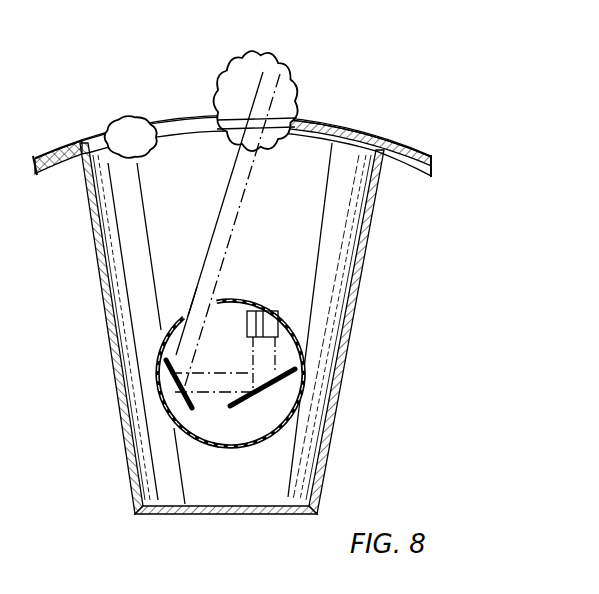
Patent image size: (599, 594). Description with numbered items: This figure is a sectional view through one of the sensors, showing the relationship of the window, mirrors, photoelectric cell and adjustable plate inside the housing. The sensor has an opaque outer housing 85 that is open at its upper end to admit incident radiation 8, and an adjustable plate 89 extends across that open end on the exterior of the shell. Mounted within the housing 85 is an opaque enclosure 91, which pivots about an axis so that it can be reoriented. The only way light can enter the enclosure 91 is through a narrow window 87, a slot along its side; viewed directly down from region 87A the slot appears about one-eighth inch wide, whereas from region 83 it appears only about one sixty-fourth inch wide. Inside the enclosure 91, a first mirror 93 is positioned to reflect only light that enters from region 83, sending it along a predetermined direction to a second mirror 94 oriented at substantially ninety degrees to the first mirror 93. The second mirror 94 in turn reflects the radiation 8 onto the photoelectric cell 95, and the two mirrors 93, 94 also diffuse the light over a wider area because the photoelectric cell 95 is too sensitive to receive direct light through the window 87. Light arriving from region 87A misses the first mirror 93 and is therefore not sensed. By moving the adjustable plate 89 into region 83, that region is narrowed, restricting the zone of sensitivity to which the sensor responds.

The incident radiation 8 is at (228, 216).
The region 83 is at (265, 93).
The outer housing 85 is at (90, 243).
The narrow window 87 is at (202, 307).
The region 87A is at (136, 118).
The adjustable plate 89 is at (366, 126).
The enclosure 91 is at (160, 336).
The first mirror 93 is at (182, 396).
The second mirror 94 is at (268, 396).
The photoelectric cell 95 is at (266, 327).